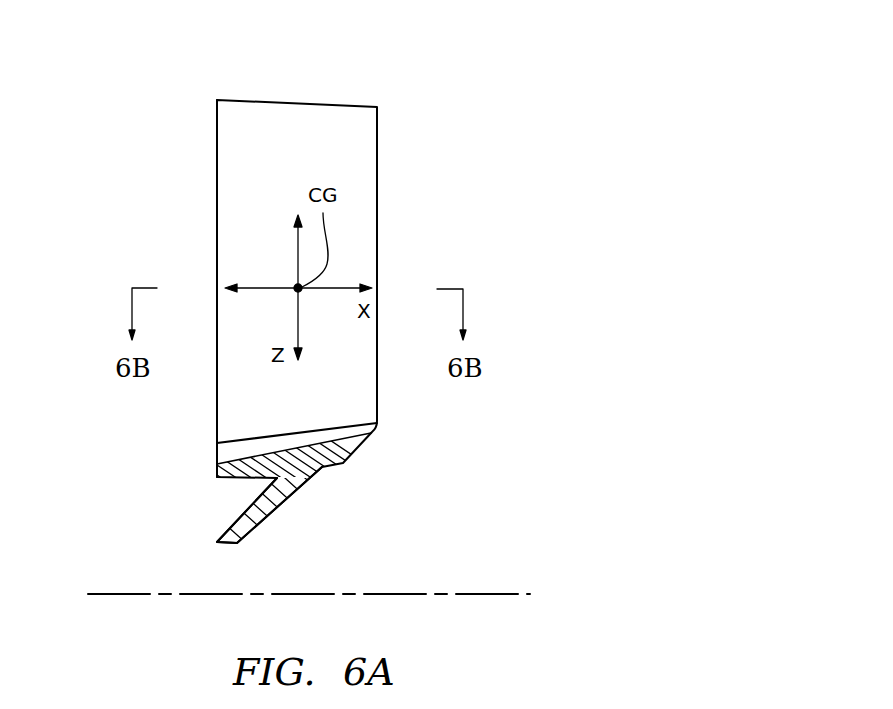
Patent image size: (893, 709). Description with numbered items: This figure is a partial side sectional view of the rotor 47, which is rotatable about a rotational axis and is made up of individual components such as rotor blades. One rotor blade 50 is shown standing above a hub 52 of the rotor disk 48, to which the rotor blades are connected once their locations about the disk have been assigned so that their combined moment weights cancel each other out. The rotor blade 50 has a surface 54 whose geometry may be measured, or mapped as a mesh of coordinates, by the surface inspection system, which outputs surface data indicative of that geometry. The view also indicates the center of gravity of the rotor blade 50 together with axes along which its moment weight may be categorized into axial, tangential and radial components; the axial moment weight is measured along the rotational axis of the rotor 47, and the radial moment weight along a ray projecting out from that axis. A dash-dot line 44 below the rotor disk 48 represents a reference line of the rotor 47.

The rotor 47 is at (310, 279).
The rotor blade 50 is at (382, 128).
The surface 54 is at (216, 165).
The hub 52 is at (345, 456).
The rotor disk 48 is at (320, 492).
The axis of rotation 44 is at (510, 594).